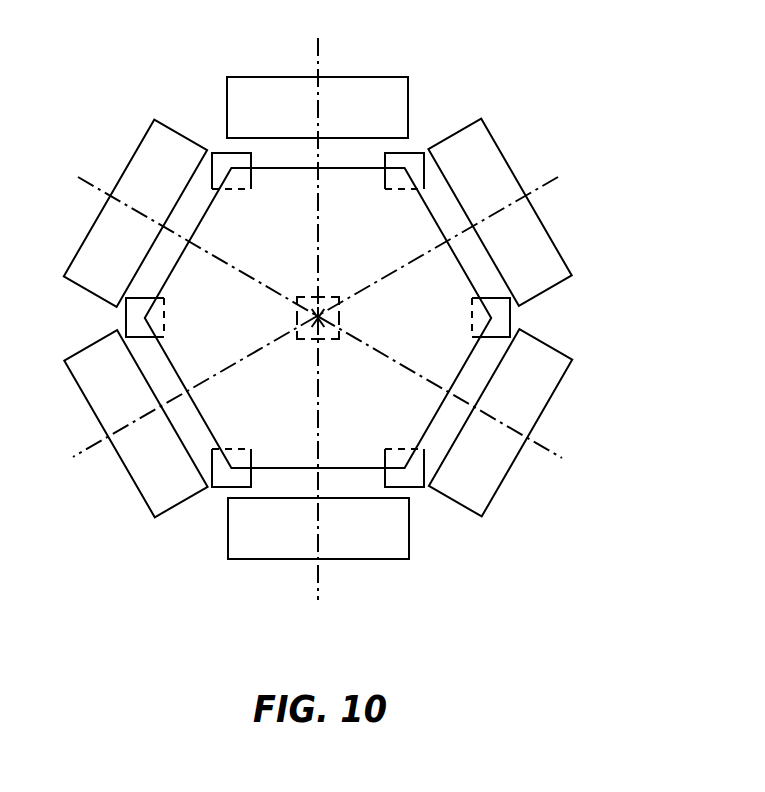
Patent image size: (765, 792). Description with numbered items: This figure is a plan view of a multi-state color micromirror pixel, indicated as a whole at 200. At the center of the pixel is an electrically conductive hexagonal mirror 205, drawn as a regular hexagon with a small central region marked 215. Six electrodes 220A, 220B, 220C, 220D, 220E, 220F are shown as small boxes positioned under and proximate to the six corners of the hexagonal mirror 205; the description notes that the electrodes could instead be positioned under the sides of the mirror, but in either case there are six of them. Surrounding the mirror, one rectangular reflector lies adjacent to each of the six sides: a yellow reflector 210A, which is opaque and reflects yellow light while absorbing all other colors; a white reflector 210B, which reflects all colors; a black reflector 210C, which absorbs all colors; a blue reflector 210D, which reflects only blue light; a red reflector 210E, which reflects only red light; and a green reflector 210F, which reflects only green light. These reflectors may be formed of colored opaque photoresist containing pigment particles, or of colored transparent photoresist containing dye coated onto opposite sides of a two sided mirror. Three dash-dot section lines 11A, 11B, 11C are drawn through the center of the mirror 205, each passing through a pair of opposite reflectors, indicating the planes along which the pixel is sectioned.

The multi-wafer electrode assembly 200 is at (566, 48).
The hexagonal mirror 205 is at (268, 337).
The yellow reflector 210A is at (186, 187).
The white reflector 210B is at (561, 383).
The black reflector 210C is at (501, 186).
The blue reflector 210D is at (133, 391).
The red reflector 210E is at (283, 110).
The green reflector 210F is at (284, 532).
The central hub 215 is at (341, 320).
The electrode 220A is at (245, 192).
The electrode 220B is at (205, 297).
The electrode 220C is at (273, 440).
The electrode 220D is at (383, 450).
The electrode 220E is at (472, 311).
The electrode 220F is at (393, 192).
The section line 11A is at (320, 322).
The section line 11B is at (314, 322).
The section line 11C is at (317, 321).